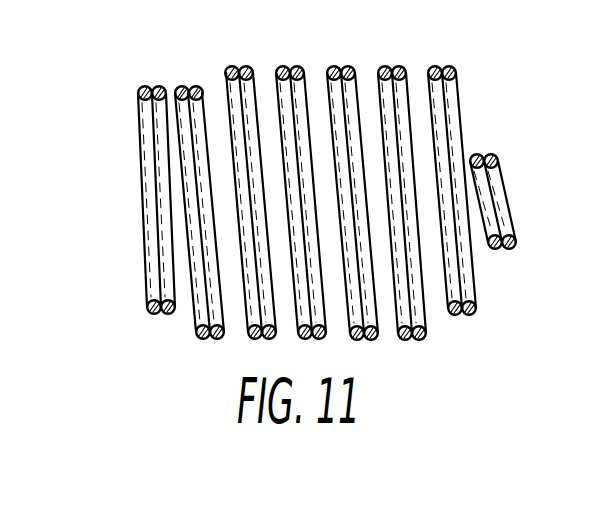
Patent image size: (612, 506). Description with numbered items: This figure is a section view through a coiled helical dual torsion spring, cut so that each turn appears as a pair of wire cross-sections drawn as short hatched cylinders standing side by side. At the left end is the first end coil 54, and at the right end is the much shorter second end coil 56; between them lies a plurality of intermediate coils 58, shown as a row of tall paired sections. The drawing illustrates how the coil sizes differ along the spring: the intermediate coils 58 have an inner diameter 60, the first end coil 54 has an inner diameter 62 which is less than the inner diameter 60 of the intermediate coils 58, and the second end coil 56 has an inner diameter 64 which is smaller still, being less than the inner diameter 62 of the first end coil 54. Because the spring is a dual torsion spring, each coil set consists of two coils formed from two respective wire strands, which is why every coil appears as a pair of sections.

The first end coil 54 is at (143, 257).
The second end coil 56 is at (512, 227).
The intermediate coils 58 is at (307, 81).
The inner diameter of the intermediate coils 60 is at (483, 125).
The inner diameter of the first end coil 62 is at (128, 173).
The inner diameter of the second end coil 64 is at (520, 185).